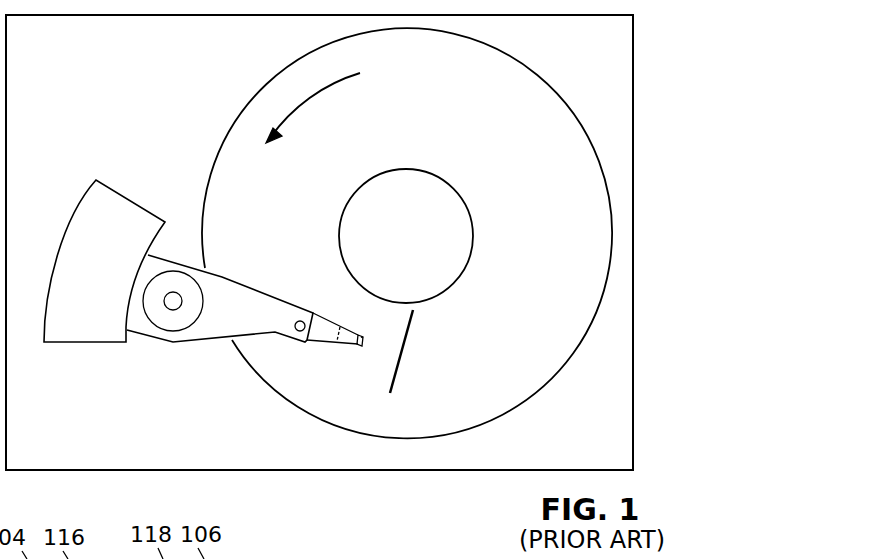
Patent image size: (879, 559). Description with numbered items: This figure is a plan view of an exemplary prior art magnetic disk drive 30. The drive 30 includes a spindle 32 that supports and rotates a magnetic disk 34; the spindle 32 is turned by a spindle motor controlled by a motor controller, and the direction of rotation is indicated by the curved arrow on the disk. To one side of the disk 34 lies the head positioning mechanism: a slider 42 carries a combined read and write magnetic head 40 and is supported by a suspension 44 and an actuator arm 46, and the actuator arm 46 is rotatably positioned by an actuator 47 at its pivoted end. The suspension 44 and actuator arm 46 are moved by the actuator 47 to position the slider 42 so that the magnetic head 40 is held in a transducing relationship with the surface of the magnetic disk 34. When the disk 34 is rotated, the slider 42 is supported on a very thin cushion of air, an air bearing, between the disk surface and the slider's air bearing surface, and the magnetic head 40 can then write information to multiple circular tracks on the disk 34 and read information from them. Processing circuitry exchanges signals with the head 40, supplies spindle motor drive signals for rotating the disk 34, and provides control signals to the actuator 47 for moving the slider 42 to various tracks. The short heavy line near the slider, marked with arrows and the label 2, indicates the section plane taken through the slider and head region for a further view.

The magnetic disk drive 30 is at (652, 52).
The spindle 32 is at (447, 178).
The magnetic disk 34 is at (555, 257).
The combined read and write magnetic head 40 is at (363, 341).
The slider 42 is at (364, 334).
The suspension 44 is at (322, 348).
The actuator arm 46 is at (262, 303).
The actuator 47 is at (137, 210).
The section line for FIG. 2 is at (414, 318).